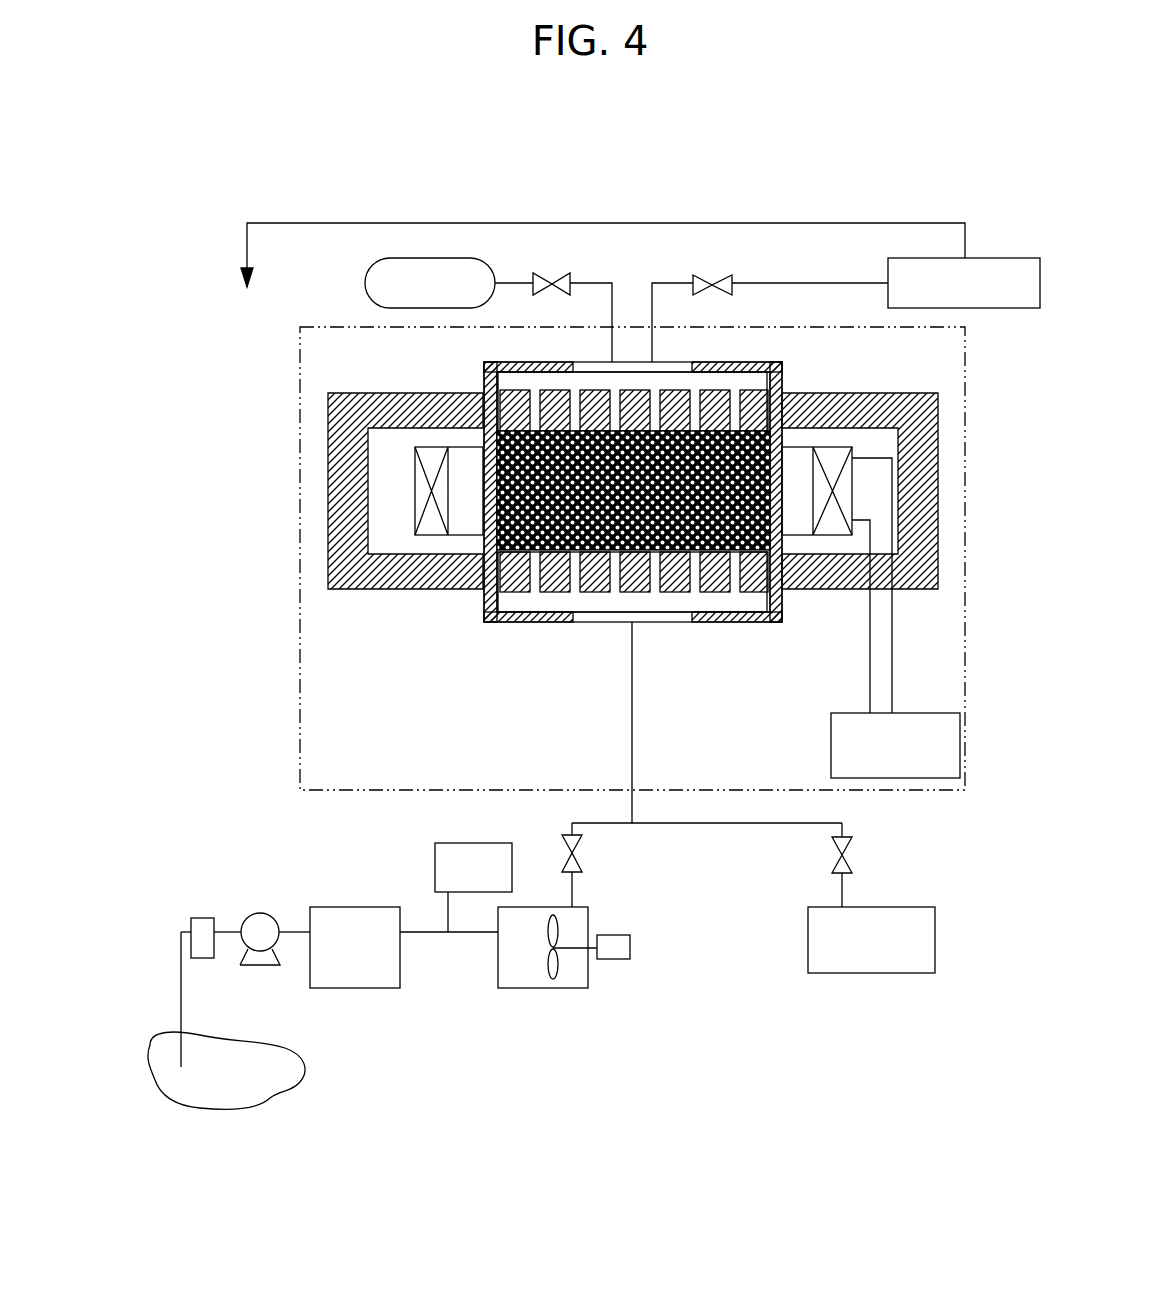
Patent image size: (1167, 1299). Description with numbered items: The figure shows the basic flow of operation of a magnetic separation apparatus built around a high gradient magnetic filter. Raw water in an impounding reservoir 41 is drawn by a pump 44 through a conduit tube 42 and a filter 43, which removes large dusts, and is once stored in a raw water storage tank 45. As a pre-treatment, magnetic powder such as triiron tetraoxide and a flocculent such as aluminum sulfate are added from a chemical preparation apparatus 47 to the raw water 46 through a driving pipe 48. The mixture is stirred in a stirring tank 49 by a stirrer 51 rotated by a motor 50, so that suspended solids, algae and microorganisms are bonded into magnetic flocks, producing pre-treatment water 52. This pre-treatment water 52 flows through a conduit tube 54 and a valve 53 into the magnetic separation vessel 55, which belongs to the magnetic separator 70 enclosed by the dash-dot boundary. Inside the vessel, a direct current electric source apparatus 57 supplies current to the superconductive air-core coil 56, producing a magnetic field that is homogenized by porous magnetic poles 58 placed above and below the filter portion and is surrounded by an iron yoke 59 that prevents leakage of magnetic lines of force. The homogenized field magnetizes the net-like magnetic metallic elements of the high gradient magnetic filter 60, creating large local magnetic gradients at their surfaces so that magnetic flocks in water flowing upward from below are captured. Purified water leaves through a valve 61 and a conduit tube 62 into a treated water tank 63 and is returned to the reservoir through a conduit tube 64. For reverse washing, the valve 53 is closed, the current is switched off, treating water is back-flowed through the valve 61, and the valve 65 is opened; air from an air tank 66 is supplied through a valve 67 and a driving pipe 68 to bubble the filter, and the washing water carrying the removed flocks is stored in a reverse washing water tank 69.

The impounding reservoir 41 is at (308, 1068).
The conduit tube 42 is at (181, 1001).
The filter 43 is at (201, 918).
The pump 44 is at (255, 913).
The raw water storage tank 45 is at (365, 988).
The raw water 46 is at (345, 913).
The chemical preparation apparatus 47 is at (455, 843).
The driving pipe 48 is at (450, 912).
The stirring tank 49 is at (540, 988).
The motor 50 is at (630, 947).
The stirrer 51 is at (568, 918).
The pre-treatment water 52 is at (570, 978).
The valve 53 is at (583, 855).
The conduit tube 54 is at (632, 714).
The magnetic separation vessel 55 is at (547, 622).
The air-core coil 56 is at (417, 482).
The direct current electric source apparatus 57 is at (925, 713).
The porous magnetic pole 58 is at (750, 393).
The iron yoke 59 is at (938, 490).
The high gradient magnetic filter 60 is at (800, 422).
The valve 61 is at (712, 285).
The conduit tube 62 is at (815, 283).
The treated water tank 63 is at (985, 310).
The conduit tube 64 is at (480, 223).
The valve 65 is at (852, 855).
The air tank 66 is at (365, 283).
The valve 67 is at (563, 278).
The driving pipe 68 is at (612, 307).
The reverse washing water tank 69 is at (890, 973).
The magnetic separator 70 is at (300, 675).